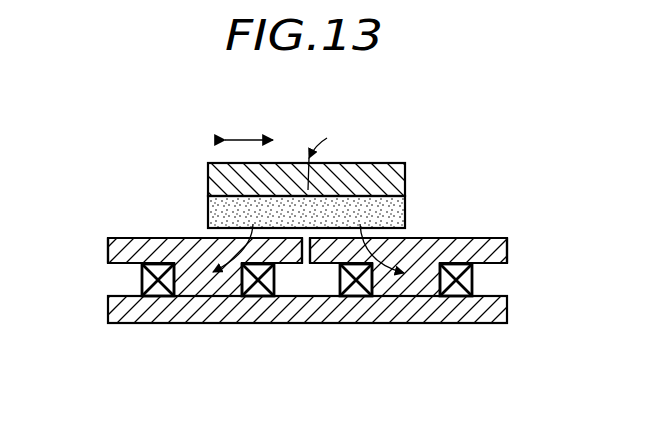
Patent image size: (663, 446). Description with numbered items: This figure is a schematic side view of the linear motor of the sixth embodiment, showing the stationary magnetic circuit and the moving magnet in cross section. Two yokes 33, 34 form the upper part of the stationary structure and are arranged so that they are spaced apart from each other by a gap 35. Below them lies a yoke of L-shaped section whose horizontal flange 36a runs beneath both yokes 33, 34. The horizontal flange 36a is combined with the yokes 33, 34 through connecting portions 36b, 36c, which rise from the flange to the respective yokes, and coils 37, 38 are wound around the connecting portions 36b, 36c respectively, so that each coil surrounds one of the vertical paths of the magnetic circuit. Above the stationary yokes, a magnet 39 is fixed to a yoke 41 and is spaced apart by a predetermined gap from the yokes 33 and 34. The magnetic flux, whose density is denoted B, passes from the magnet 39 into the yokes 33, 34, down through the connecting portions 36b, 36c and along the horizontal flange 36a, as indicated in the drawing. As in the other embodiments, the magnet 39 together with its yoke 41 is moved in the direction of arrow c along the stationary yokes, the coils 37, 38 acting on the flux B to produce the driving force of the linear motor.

The yoke 33 is at (120, 252).
The yoke 34 is at (502, 253).
The gap 35 is at (304, 262).
The horizontal flange 36a is at (270, 317).
The connecting portion 36b is at (165, 250).
The connecting portion 36c is at (418, 284).
The coil 37 is at (240, 286).
The coil 38 is at (355, 294).
The magnet 39 is at (400, 208).
The yoke 41 is at (208, 183).
The flux density B is at (205, 258).
The arrow c is at (244, 139).